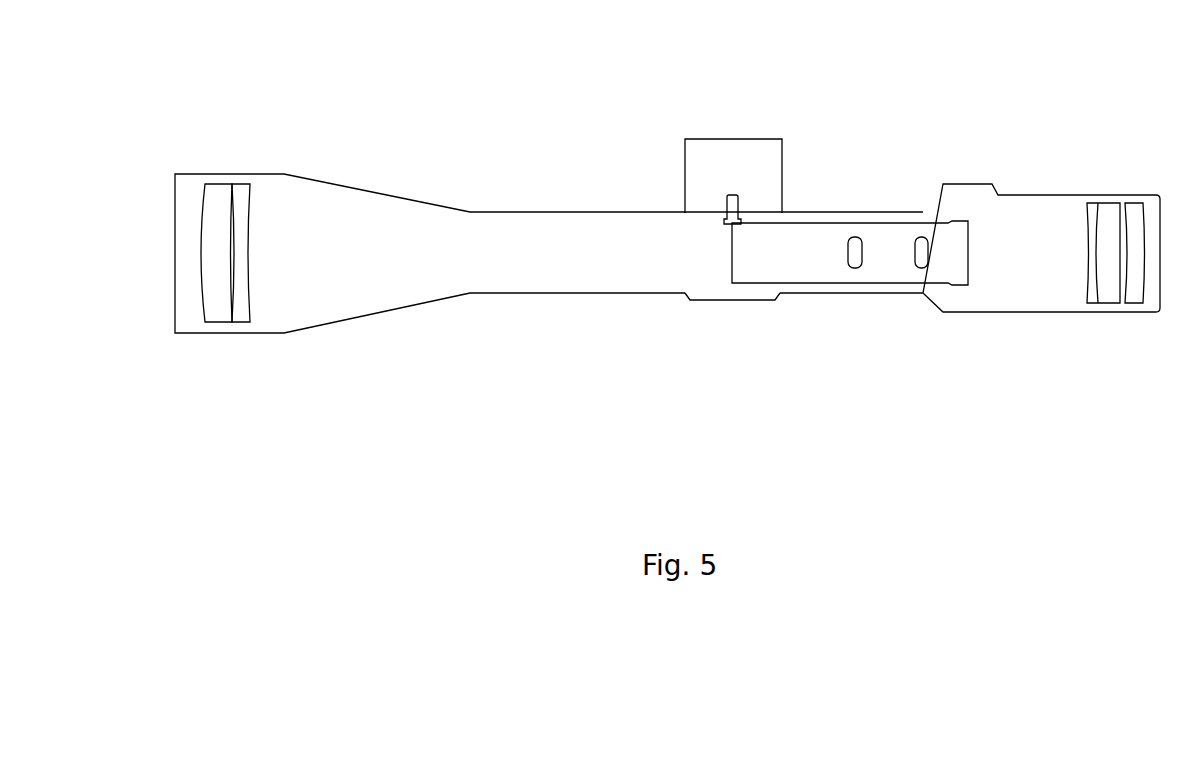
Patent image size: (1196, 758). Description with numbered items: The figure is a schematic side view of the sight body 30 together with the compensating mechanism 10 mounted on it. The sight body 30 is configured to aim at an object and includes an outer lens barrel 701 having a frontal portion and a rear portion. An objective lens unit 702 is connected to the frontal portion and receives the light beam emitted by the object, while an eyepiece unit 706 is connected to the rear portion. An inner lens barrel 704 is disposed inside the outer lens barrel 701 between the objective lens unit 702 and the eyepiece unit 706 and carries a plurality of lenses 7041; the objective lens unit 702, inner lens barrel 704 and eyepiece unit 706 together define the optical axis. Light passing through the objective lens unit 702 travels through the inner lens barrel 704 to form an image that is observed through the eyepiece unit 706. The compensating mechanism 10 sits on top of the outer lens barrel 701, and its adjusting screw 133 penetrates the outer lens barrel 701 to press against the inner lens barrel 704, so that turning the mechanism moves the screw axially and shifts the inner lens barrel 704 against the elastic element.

The compensating mechanism 10 is at (690, 123).
The adjusting screw 133 is at (725, 205).
The sight body 30 is at (713, 312).
The outer lens barrel 701 is at (553, 293).
The objective lens unit 702 is at (216, 270).
The inner lens barrel 704 is at (820, 283).
The lenses 7041 is at (919, 268).
The eyepiece unit 706 is at (1113, 263).